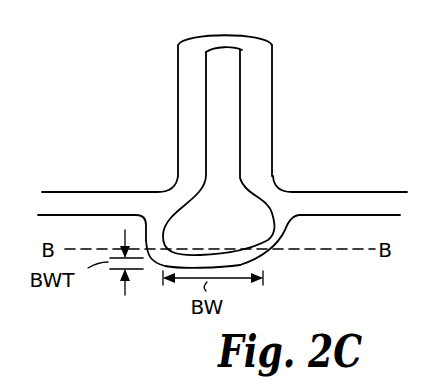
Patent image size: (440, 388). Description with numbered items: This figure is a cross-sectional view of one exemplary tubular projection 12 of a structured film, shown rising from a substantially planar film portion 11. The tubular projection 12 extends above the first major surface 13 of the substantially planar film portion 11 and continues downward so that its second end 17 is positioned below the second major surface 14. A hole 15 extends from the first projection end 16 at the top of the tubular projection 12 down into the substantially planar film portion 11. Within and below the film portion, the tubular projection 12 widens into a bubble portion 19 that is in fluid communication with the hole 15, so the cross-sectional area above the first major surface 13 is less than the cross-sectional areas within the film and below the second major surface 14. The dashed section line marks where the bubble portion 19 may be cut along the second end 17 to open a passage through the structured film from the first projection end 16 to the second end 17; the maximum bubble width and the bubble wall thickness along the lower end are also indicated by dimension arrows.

The substantially planar film portion 11 is at (353, 200).
The tubular projection 12 is at (177, 102).
The first major surface 13 is at (305, 192).
The second major surface 14 is at (315, 218).
The hole 15 is at (227, 92).
The first projection end 16 is at (243, 35).
The second end 17 is at (154, 272).
The bubble portion 19 is at (180, 220).